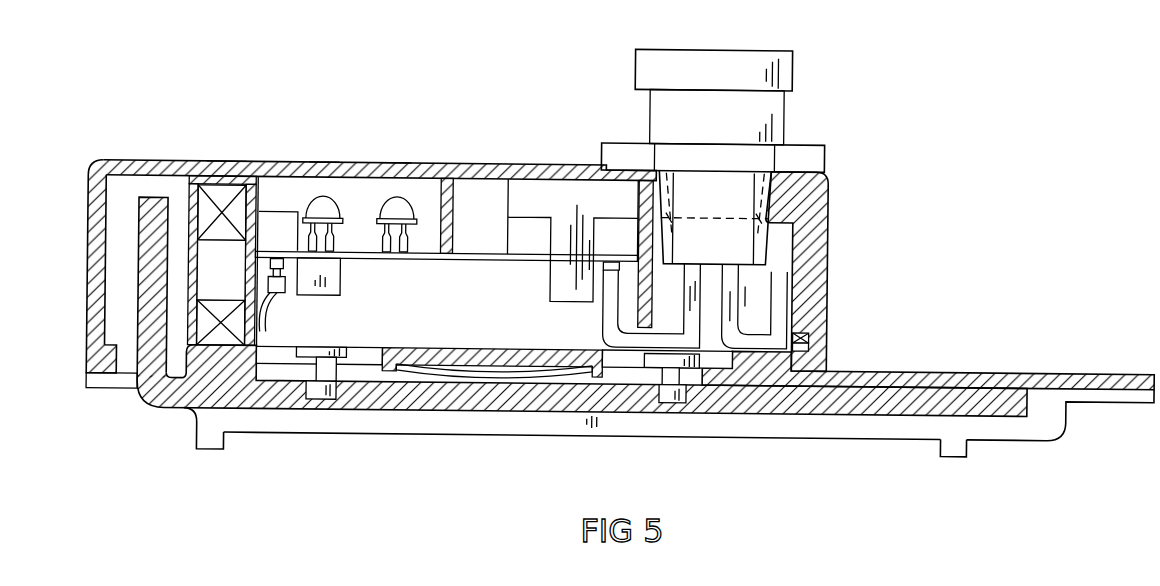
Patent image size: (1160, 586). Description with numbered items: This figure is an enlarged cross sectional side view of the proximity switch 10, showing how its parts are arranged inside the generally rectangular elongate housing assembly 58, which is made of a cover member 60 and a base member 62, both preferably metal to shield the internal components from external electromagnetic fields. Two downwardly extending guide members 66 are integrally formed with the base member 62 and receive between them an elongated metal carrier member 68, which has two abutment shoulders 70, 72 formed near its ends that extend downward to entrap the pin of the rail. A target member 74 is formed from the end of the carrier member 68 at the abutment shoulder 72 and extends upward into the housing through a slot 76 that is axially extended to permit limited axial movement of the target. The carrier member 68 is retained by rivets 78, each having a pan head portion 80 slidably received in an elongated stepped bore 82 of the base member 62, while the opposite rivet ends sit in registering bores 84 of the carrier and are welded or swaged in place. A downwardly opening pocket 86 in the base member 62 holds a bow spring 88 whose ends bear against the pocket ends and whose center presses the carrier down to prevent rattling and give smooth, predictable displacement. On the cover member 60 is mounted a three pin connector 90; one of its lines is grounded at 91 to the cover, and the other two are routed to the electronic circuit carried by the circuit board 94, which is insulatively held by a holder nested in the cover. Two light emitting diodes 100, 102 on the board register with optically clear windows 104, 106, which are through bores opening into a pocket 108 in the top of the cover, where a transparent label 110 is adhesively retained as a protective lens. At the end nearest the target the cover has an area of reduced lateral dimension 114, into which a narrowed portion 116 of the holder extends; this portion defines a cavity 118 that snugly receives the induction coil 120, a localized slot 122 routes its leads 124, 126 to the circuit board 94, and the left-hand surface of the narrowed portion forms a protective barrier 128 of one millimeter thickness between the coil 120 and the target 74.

The proximity switch 10 is at (393, 82).
The housing assembly 58 is at (856, 316).
The cover member 60 is at (817, 213).
The base member 62 is at (1048, 373).
The guide members 66 is at (1048, 422).
The carrier member 68 is at (802, 402).
The abutment shoulder 70 is at (955, 443).
The abutment shoulder 72 is at (212, 443).
The target member 74 is at (147, 240).
The slot 76 is at (117, 358).
The rivets 78 is at (318, 408).
The pan head portion 80 is at (335, 360).
The elongated stepped bore 82 is at (373, 362).
The registering bores 84 is at (667, 394).
The pocket 86 is at (494, 362).
The bow spring 88 is at (543, 380).
The three pin connector 90 is at (712, 63).
The ground connection 91 is at (810, 333).
The circuit board 94 is at (465, 261).
The light emitting diode 100 is at (307, 205).
The light emitting diode 102 is at (405, 198).
The window 104 is at (323, 170).
The window 106 is at (393, 172).
The pocket 108 is at (222, 163).
The label 110 is at (543, 168).
The area of reduced lateral dimension 114 is at (110, 168).
The narrowed portion 116 is at (217, 178).
The cavity 118 is at (210, 273).
The induction coil 120 is at (205, 208).
The localized slot 122 is at (256, 343).
The lead 124 is at (274, 305).
The lead 126 is at (260, 331).
The protective barrier 128 is at (190, 302).